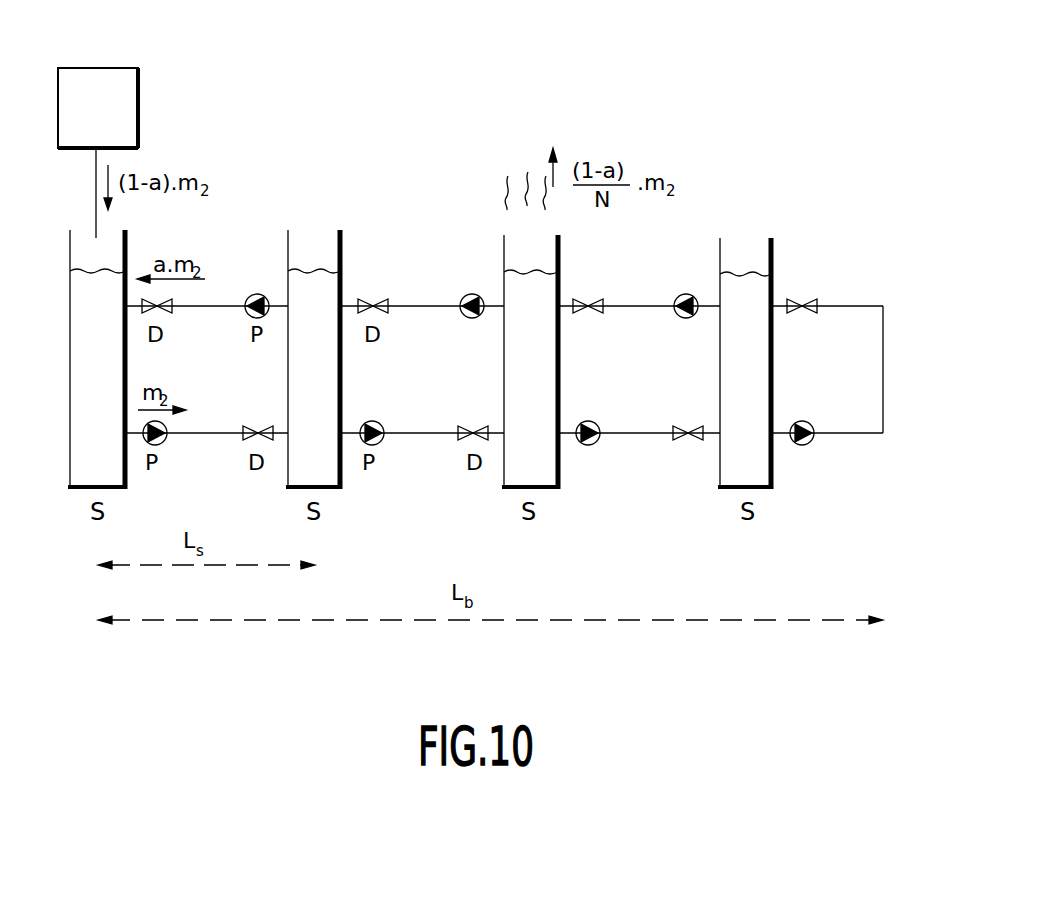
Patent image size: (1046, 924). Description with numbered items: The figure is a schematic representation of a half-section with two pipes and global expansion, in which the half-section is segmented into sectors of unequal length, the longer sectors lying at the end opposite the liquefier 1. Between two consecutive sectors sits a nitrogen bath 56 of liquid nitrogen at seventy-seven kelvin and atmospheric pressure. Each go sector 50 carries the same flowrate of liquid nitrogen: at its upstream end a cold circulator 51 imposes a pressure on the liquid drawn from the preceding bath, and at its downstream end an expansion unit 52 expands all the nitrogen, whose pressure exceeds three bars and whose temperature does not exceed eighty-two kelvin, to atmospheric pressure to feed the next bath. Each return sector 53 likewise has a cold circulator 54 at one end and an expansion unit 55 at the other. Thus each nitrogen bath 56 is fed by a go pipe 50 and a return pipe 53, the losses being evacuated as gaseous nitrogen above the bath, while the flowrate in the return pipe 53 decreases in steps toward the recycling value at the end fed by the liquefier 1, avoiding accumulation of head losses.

The liquefier 1 is at (139, 100).
The go sector 50 is at (205, 433).
The cold circulator 51 is at (163, 444).
The expansion unit 52 is at (250, 441).
The return sector 53 is at (215, 306).
The cold circulator 54 is at (250, 318).
The expansion unit 55 is at (162, 314).
The nitrogen bath 56 is at (320, 250).